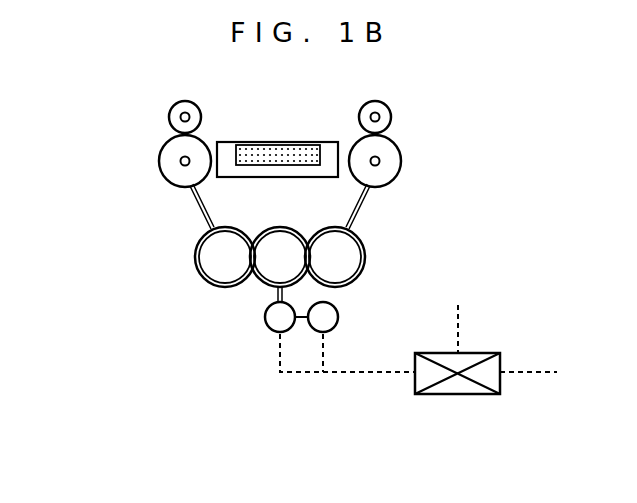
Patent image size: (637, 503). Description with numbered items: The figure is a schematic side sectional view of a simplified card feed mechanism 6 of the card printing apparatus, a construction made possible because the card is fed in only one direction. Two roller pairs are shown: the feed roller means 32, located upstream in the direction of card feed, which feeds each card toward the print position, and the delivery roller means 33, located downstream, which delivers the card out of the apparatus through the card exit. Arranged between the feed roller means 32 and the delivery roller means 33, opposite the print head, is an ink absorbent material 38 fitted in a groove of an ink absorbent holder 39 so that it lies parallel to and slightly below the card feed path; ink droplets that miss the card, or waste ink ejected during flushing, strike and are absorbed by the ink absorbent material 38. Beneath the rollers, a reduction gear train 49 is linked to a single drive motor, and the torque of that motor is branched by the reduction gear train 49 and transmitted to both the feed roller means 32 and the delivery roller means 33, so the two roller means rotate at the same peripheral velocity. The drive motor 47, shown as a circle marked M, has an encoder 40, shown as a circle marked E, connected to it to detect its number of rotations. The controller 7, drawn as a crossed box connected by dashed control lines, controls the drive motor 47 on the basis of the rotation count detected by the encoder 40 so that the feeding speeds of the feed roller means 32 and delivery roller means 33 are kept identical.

The card feed mechanism 6 is at (493, 155).
The controller 7 is at (453, 396).
The feed roller means 32 is at (408, 131).
The delivery roller means 33 is at (130, 157).
The ink absorbent material 38 is at (283, 150).
The ink absorbent holder 39 is at (277, 178).
The encoder 40 is at (338, 314).
The motor 47 is at (266, 322).
The reduction gear train 49 is at (396, 234).